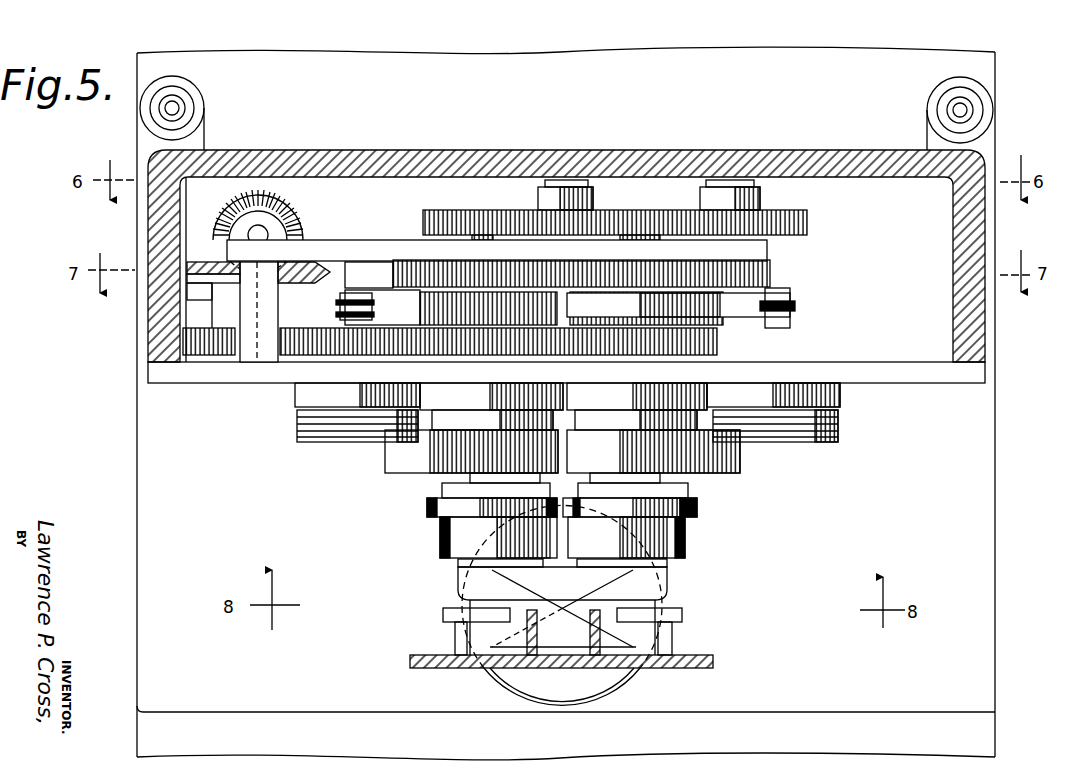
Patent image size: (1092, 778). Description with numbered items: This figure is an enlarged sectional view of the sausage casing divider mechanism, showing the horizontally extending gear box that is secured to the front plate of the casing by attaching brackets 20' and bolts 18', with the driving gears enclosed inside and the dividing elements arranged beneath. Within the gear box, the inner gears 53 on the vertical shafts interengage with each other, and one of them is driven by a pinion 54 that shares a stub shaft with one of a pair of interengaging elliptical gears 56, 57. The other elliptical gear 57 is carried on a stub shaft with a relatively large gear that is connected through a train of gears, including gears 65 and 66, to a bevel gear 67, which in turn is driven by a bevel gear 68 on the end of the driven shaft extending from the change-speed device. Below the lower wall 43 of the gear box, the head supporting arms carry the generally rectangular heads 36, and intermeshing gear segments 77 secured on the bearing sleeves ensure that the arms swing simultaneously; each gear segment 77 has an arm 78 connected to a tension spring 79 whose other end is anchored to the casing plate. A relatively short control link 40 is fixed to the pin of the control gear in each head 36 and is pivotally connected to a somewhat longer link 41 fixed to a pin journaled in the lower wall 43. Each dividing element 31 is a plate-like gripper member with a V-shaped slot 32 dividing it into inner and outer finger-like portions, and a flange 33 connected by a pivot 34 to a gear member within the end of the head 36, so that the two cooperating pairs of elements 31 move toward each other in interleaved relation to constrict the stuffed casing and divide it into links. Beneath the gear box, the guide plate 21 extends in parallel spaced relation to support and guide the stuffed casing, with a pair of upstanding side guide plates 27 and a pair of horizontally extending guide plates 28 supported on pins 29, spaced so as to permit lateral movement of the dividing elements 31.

The bolts 18' is at (562, 113).
The attaching brackets 20' is at (562, 139).
The guide plate 21 is at (437, 668).
The upstanding side guide plates 27 is at (598, 623).
The horizontally extending guide plates 28 is at (443, 614).
The pins 29 is at (455, 640).
The dividing elements 31 is at (458, 582).
The V-shaped slots 32 is at (583, 668).
The flange 33 is at (458, 565).
The pivot 34 is at (480, 548).
The head 36 is at (457, 506).
The control link 40 is at (305, 437).
The link 41 is at (300, 414).
The lower wall 43 is at (902, 383).
The inner gears 53 is at (440, 265).
The pinion 54 is at (773, 268).
The elliptical gear 56 is at (808, 221).
The elliptical gear 57 is at (512, 211).
The gear 65 is at (384, 356).
The gear 66 is at (222, 348).
The bevel gear 67 is at (195, 262).
The bevel gear 68 is at (292, 222).
The gear segments 77 is at (583, 338).
The arm 78 is at (744, 317).
The tension spring 79 is at (797, 305).